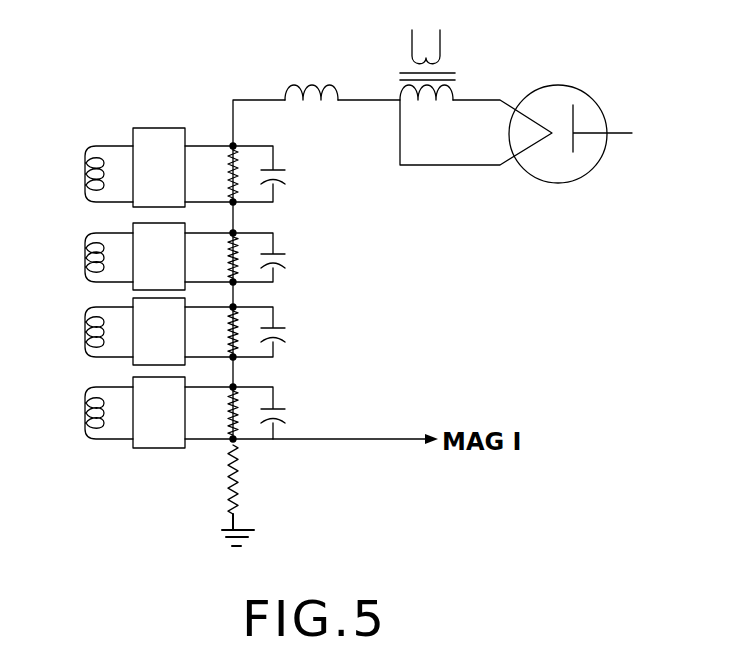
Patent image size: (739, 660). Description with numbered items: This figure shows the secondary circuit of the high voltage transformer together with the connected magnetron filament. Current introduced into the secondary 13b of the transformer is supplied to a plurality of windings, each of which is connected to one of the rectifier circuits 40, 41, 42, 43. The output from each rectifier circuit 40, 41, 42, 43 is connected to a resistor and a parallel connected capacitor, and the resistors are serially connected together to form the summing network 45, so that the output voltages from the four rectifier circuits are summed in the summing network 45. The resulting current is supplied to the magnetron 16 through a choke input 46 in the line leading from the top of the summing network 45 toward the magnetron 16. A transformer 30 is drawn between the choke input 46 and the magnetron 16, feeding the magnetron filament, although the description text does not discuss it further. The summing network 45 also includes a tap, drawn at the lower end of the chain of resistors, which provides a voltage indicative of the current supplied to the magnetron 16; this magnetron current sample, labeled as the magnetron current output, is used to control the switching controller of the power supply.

The secondary 13b is at (83, 292).
The magnetron 16 is at (570, 114).
The filament transformer 30 is at (444, 65).
The rectifier circuit 40 is at (141, 180).
The rectifier circuit 41 is at (141, 266).
The rectifier circuit 42 is at (141, 345).
The rectifier circuit 43 is at (141, 424).
The summing network 45 is at (266, 332).
The choke input 46 is at (311, 77).